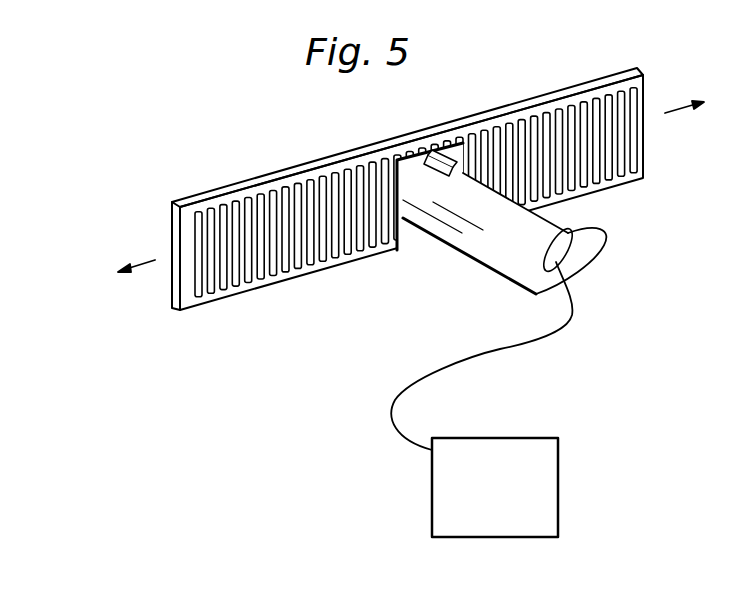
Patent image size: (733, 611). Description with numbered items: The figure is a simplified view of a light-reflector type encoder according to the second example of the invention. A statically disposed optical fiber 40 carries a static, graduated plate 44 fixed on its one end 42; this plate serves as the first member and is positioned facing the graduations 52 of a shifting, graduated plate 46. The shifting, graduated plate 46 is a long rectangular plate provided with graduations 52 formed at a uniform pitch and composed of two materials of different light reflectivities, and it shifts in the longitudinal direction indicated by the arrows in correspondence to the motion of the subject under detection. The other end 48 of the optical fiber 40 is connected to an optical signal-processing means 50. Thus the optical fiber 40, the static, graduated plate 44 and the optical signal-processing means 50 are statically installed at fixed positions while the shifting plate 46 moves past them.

The optical fiber 40 is at (556, 229).
The one end of the optical fiber 42 is at (424, 164).
The static graduated plate 44 is at (400, 188).
The shifting graduated plate 46 is at (407, 170).
The other end of the optical fiber 48 is at (400, 437).
The optical signal-processing means 50 is at (473, 538).
The graduations 52 is at (583, 100).